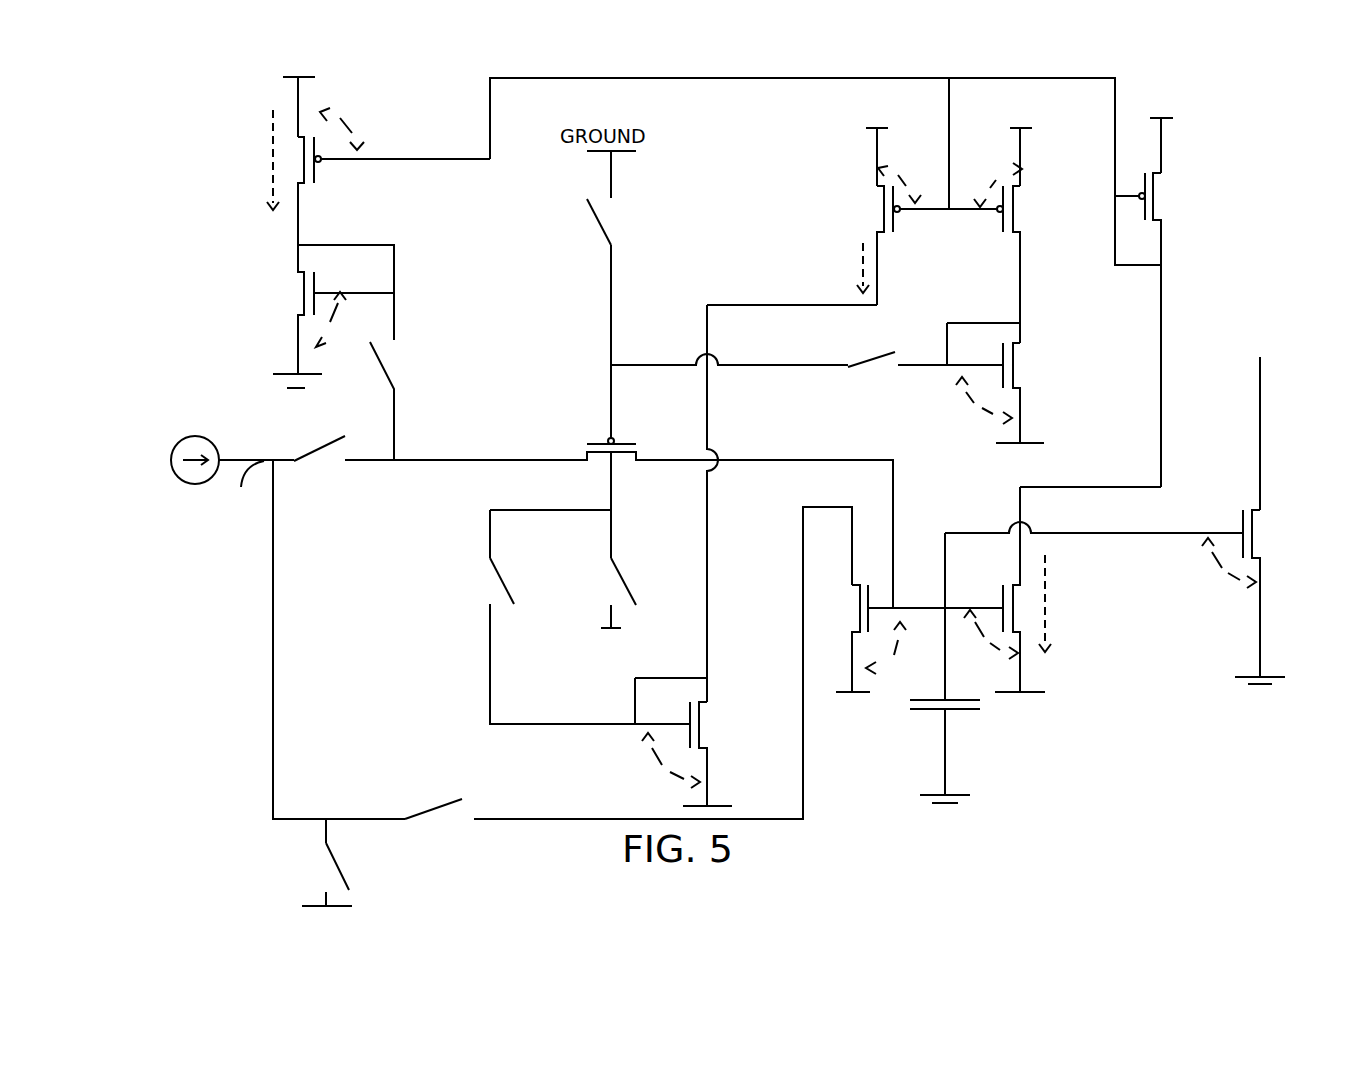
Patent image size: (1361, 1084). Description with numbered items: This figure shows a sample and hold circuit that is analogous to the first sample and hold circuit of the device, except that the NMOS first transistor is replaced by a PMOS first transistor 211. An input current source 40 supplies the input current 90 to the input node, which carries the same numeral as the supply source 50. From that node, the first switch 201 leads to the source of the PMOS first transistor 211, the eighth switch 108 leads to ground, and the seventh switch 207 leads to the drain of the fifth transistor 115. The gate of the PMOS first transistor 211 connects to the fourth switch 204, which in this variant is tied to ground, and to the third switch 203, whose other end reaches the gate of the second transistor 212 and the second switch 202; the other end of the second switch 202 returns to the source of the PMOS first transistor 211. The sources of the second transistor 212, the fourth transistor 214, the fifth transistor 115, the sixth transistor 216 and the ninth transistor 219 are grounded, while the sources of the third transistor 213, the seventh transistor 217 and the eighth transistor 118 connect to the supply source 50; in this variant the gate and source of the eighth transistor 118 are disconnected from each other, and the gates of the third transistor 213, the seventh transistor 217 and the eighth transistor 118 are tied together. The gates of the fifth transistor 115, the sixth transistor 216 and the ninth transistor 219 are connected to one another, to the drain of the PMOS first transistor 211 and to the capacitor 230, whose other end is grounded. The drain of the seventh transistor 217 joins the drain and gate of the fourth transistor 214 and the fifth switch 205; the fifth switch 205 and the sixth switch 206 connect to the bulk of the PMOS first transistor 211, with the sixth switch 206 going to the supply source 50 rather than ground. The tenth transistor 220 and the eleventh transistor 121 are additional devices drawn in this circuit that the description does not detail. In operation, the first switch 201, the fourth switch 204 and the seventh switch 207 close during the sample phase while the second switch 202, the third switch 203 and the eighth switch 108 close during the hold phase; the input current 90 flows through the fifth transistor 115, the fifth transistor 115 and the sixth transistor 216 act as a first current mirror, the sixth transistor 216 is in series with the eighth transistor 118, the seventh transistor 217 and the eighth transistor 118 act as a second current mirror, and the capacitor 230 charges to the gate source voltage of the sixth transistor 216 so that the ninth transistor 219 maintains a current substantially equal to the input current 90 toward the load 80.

The input current source 40 is at (190, 437).
The input current Iin 90 is at (256, 443).
The supply source VDD 50 is at (716, 349).
The switch S1 201 is at (328, 460).
The switch S2 202 is at (419, 401).
The switch S3 203 is at (547, 341).
The switch S4 204 is at (635, 222).
The switch S5 205 is at (467, 581).
The switch S6 206 is at (647, 576).
The switch S7 207 is at (654, 585).
The eighth switch S8 108 is at (362, 862).
The PMOS transistor P1 211 is at (588, 488).
The transistor T2 212 is at (314, 316).
The transistor T3 213 is at (354, 176).
The transistor T4 214 is at (691, 754).
The fifth transistor T5 115 is at (875, 637).
The transistor T6 216 is at (1023, 589).
The transistor T7 217 is at (900, 227).
The eighth transistor T8 118 is at (1008, 243).
The transistor T9 219 is at (1250, 597).
The transistor T10 220 is at (1008, 393).
The transistor T11 121 is at (1171, 330).
The capacitor C 230 is at (964, 668).
The load 80 is at (1263, 417).